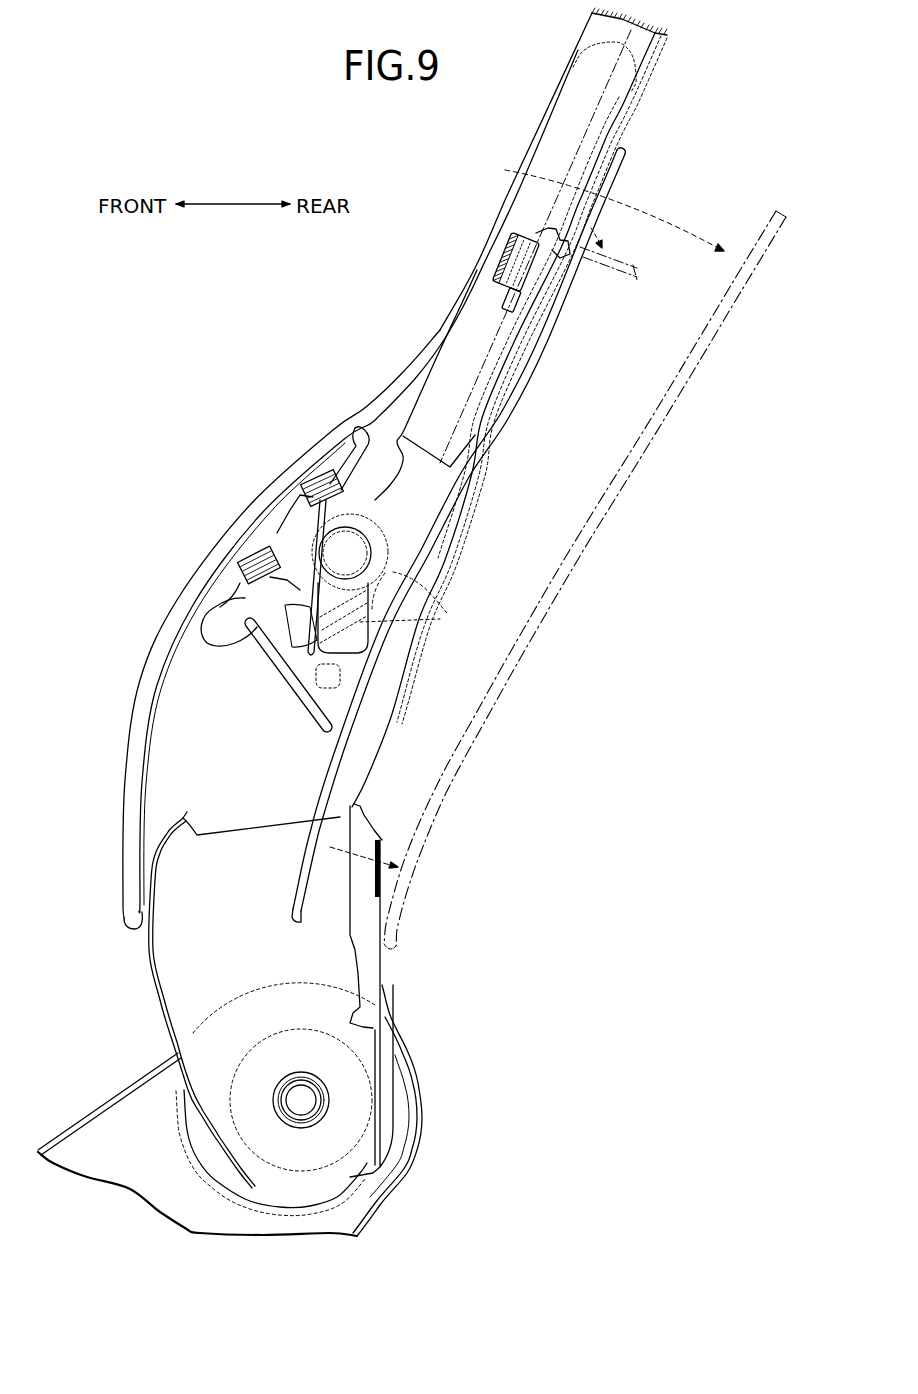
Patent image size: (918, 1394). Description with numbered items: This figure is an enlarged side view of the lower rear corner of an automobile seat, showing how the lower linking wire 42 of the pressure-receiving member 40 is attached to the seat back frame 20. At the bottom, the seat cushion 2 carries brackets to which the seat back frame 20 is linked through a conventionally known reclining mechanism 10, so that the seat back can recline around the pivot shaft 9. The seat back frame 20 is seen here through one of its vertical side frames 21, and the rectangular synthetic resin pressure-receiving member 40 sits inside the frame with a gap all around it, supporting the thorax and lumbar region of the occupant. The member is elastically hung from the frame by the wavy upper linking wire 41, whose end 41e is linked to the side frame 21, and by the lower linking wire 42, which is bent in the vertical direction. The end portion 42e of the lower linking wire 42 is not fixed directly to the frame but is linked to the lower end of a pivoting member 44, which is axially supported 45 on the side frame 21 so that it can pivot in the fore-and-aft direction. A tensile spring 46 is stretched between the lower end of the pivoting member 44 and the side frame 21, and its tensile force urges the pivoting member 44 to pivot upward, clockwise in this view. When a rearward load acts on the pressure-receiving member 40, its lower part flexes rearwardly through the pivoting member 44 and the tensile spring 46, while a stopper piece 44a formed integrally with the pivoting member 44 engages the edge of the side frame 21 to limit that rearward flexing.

The seat cushion 2 is at (100, 1092).
The pivot shaft 9 is at (294, 1078).
The reclining mechanism 10 is at (407, 1074).
The seat back frame 20 is at (652, 72).
The side frame 21 is at (128, 736).
The pressure-receiving member 40 is at (508, 422).
The upper linking wire 41 is at (557, 220).
The end of the upper linking wire 41e is at (520, 302).
The lower linking wire 42 is at (316, 722).
The end portion of the lower linking wire 42e is at (276, 691).
The pivoting member 44 is at (360, 527).
The stopper piece 44a is at (440, 619).
The axial support 45 is at (352, 554).
The tensile spring 46 is at (282, 470).